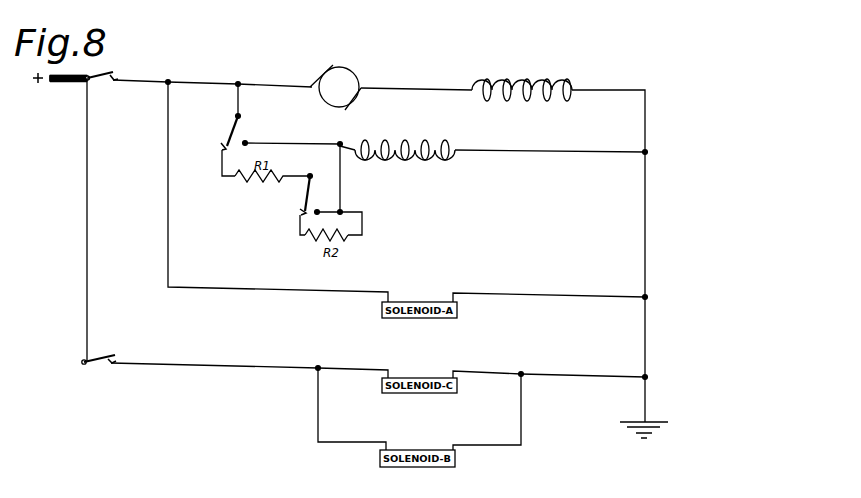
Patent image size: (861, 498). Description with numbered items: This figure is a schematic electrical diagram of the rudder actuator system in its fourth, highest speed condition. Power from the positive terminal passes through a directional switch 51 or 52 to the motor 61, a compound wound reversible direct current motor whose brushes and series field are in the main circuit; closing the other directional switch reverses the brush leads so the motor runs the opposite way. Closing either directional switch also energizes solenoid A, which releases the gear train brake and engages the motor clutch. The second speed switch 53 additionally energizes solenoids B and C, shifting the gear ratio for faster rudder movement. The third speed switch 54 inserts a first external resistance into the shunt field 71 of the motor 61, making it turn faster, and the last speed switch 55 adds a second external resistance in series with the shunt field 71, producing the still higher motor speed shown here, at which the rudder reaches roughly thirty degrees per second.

The directional switch 51 is at (145, 69).
The directional switch 52 is at (118, 77).
The second speed switch 53 is at (102, 356).
The third speed switch 54 is at (234, 124).
The last speed switch 55 is at (303, 196).
The compound wound D. C. reversible electric motor 61 is at (302, 47).
The shunt field 71 is at (493, 169).